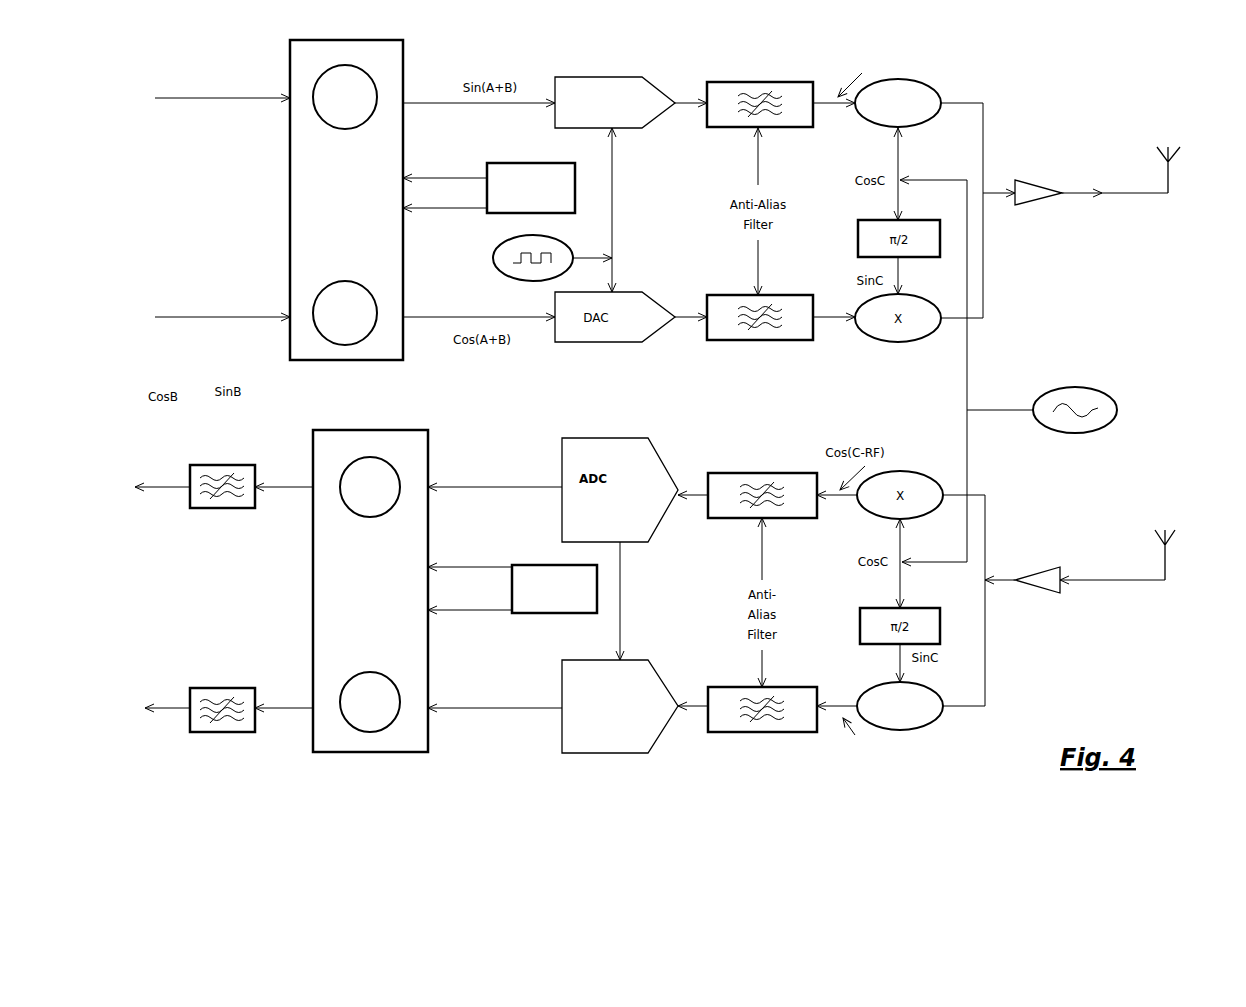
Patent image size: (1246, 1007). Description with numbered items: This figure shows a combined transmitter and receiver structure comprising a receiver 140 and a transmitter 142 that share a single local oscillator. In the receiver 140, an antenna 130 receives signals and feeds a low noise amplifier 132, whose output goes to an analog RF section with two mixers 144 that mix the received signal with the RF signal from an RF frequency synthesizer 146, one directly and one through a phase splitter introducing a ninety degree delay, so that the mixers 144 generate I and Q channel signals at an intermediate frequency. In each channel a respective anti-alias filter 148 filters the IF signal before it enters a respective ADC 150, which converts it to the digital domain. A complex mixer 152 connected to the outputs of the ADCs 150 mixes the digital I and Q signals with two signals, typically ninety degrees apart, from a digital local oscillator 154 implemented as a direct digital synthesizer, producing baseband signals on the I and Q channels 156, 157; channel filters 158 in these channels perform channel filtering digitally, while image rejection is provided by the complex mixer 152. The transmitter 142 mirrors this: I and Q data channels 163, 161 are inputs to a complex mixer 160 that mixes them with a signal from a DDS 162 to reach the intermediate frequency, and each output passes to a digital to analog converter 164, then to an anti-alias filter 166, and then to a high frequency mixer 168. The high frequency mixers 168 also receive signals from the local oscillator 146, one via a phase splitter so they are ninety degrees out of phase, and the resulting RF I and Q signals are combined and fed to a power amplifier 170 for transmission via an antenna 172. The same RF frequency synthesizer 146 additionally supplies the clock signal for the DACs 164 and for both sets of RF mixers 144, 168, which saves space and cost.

The antenna 130 is at (1167, 558).
The low noise amplifier 132 is at (1048, 592).
The receiver 140 is at (1105, 675).
The transmitter 142 is at (1095, 276).
The mixers 144 is at (922, 723).
The RF frequency synthesizer 146 is at (1073, 433).
The anti-alias filter 148 is at (740, 732).
The ADC 150 is at (562, 750).
The complex mixer 152 is at (413, 753).
The digital local oscillator 154 is at (568, 613).
The I channel 156 is at (290, 487).
The Q channel 157 is at (292, 708).
The channel filters 158 is at (225, 508).
The complex mixer 160 is at (387, 37).
The Q data channel 161 is at (230, 100).
The DDS 162 is at (537, 163).
The I data channel 163 is at (223, 317).
The digital to analog converter 164 is at (605, 77).
The anti-alias filter 166 is at (792, 82).
The high frequency mixers 168 is at (928, 86).
The power amplifier 170 is at (1033, 205).
The antenna 172 is at (1170, 178).